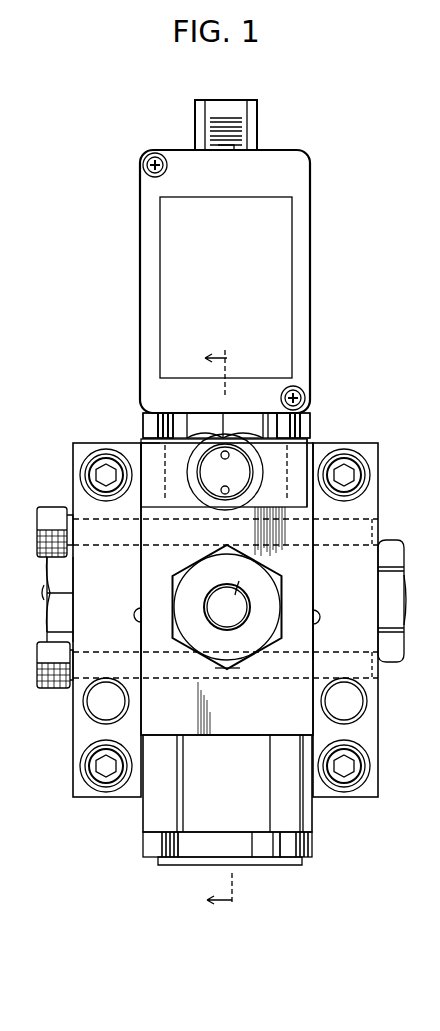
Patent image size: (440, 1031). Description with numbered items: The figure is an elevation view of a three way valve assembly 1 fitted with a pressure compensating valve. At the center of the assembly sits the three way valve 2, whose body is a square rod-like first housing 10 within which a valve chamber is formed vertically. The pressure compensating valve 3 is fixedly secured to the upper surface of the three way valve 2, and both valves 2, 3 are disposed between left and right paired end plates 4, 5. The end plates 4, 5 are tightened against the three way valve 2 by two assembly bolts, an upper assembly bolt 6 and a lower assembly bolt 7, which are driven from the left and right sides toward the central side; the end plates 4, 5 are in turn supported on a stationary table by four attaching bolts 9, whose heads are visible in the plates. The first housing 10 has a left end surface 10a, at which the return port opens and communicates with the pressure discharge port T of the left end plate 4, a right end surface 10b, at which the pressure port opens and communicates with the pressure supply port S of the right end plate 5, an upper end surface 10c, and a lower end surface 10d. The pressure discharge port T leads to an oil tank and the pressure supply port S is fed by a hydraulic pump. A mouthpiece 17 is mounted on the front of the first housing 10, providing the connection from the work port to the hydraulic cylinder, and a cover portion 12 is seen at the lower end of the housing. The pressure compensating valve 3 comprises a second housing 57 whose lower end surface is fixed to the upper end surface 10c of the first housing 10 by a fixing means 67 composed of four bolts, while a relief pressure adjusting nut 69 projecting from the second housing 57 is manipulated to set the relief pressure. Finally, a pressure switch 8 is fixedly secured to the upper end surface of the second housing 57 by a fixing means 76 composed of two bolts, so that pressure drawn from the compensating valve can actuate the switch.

The pressure control valve 1 is at (104, 387).
The three way valve 2 is at (329, 571).
The pressure compensating valve 3 is at (319, 443).
The left end plate 4 is at (72, 448).
The right end plate 5 is at (378, 452).
The upper assembly bolt 6 is at (52, 507).
The lower assembly bolt 7 is at (60, 690).
The pressure switch 8 is at (310, 262).
The attaching bolt 9 is at (90, 450).
The first housing 10 is at (300, 560).
The left end surface 10a is at (143, 617).
The right end surface 10b is at (316, 617).
The upper end surface 10c is at (163, 493).
The bottom face of valve body 10d is at (228, 732).
The end cap 12 is at (312, 822).
The mouthpiece 17 is at (237, 668).
The second housing 57 is at (284, 457).
The fixing means 67 is at (142, 415).
The relief pressure adjusting nut 69 is at (208, 468).
The fixing means 76 is at (180, 408).
The pressure discharge port T is at (66, 594).
The pressure supply port S is at (405, 592).